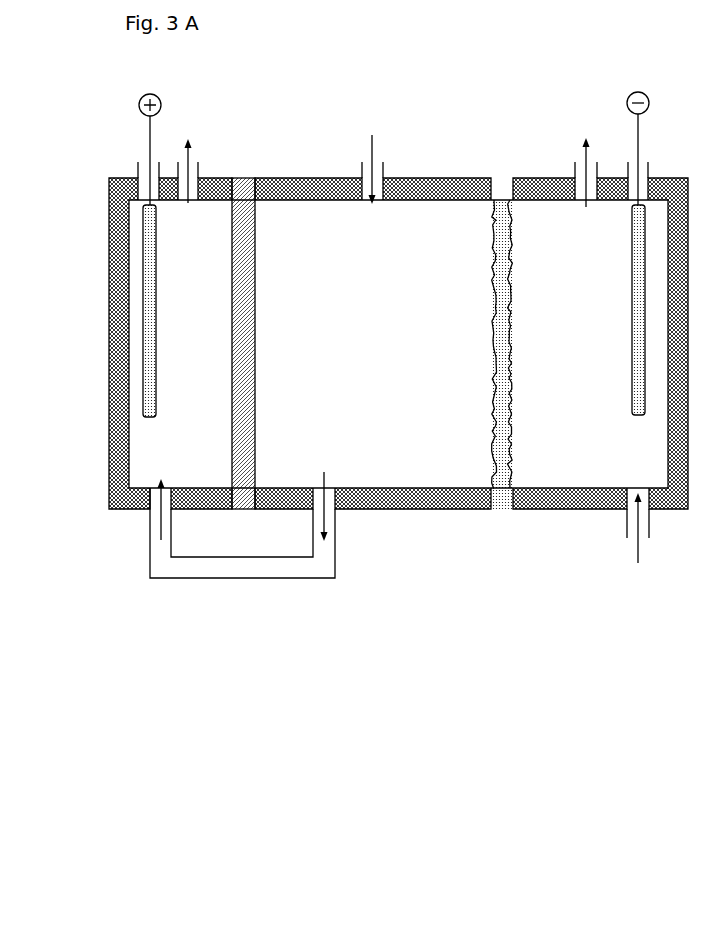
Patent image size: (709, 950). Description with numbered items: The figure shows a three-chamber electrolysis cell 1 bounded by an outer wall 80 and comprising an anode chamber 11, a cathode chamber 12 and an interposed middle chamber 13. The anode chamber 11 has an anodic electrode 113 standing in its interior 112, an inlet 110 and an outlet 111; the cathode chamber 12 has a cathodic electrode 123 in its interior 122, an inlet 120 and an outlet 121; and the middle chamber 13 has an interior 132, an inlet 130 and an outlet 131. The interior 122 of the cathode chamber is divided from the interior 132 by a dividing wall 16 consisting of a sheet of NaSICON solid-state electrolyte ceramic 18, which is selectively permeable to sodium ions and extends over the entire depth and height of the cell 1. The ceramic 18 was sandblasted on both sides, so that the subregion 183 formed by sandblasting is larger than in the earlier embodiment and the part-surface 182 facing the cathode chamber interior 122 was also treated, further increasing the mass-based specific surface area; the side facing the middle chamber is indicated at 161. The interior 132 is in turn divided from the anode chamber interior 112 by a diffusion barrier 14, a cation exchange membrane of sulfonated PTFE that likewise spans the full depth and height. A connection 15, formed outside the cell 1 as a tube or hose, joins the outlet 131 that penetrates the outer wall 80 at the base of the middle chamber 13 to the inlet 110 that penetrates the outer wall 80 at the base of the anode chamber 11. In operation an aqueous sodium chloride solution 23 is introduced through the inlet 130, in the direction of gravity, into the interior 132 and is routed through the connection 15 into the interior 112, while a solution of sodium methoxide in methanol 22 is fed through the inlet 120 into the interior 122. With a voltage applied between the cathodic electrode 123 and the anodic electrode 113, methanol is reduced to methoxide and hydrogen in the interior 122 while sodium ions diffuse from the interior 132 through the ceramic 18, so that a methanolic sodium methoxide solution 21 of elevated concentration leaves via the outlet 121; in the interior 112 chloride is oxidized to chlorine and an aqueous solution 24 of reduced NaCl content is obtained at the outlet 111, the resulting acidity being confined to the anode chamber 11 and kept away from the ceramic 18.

The electrolysis cell 1 is at (660, 115).
The anode chamber 11 is at (192, 516).
The cathode chamber 12 is at (632, 541).
The middle chamber 13 is at (470, 519).
The diffusion barrier 14 is at (258, 265).
The connection 15 is at (248, 584).
The dividing wall 16 is at (465, 321).
The NaSICON solid-state electrolyte ceramic 18 is at (484, 230).
The methanolic solution of sodium methoxide 21 is at (590, 150).
The solution of sodium methoxide in methanol 22 is at (632, 547).
The aqueous solution of sodium chloride 23 is at (363, 155).
The aqueous solution 24 is at (185, 130).
The outer wall 80 is at (474, 508).
The inlet 110 is at (138, 519).
The outlet 111 is at (199, 170).
The interior 112 is at (193, 255).
The anodic electrode 113 is at (160, 272).
The inlet 120 is at (658, 522).
The outlet 121 is at (573, 168).
The interior 122 is at (600, 253).
The cathodic electrode 123 is at (625, 258).
The inlet 130 is at (393, 170).
The outlet 131 is at (340, 515).
The interior 132 is at (381, 241).
The membrane first side 161 is at (482, 432).
The part-surface 182 is at (521, 430).
The subregion 183 is at (502, 298).